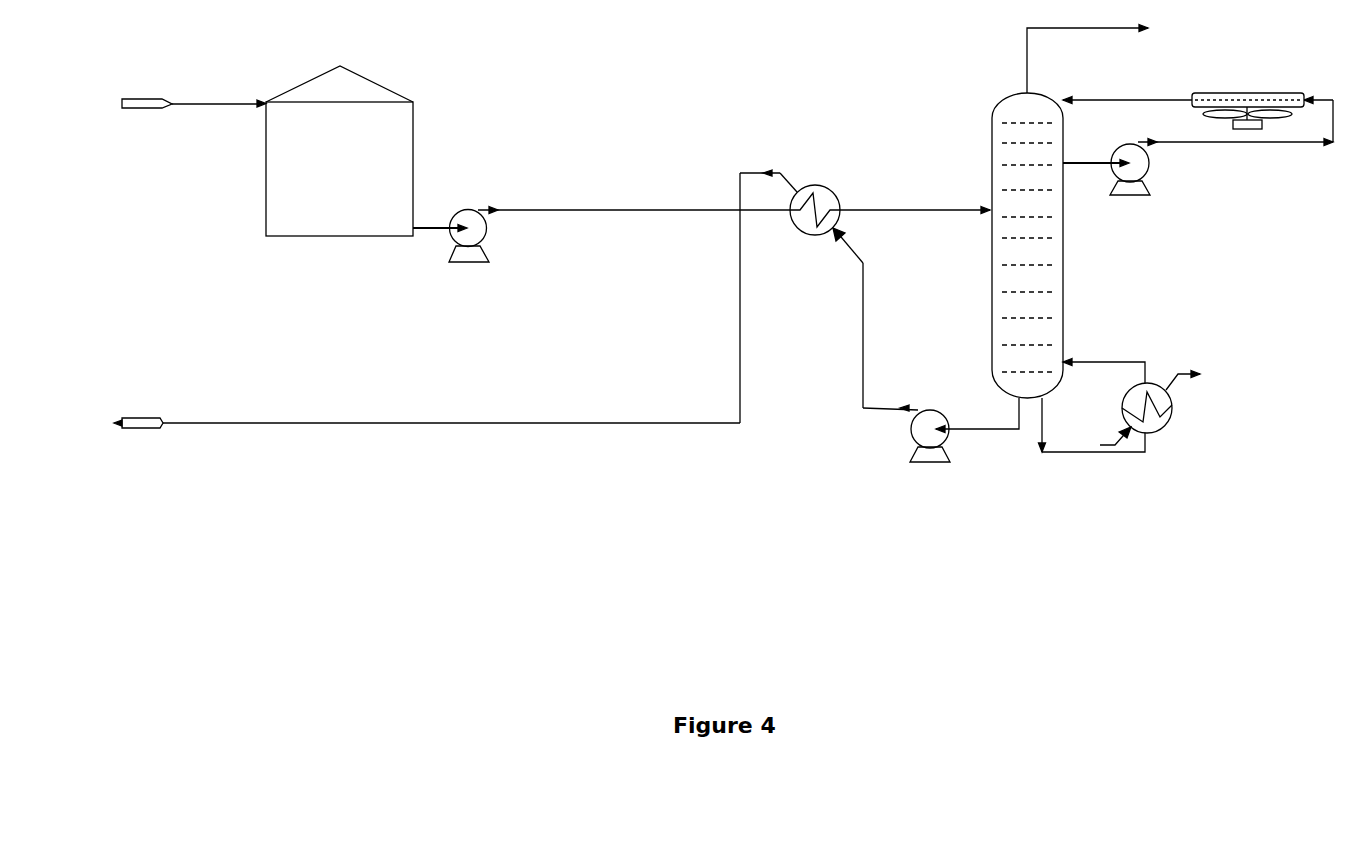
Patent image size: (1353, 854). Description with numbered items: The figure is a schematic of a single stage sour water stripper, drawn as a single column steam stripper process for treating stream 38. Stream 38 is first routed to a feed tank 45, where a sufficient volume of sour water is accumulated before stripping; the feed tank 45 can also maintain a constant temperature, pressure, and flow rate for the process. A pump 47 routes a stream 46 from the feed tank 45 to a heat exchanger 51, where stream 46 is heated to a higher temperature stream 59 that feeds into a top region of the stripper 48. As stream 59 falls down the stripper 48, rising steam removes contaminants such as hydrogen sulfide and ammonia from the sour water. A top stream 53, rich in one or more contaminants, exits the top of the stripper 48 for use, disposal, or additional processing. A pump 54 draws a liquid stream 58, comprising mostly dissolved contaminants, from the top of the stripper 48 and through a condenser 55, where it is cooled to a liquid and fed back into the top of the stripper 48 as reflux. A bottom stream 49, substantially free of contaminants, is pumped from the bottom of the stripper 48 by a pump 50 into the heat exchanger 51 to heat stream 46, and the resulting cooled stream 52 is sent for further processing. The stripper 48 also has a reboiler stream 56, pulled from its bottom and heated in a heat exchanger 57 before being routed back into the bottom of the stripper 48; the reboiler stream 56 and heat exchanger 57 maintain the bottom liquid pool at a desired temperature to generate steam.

The stream 38 is at (173, 104).
The feed tank 45 is at (342, 167).
The stream 46 is at (440, 206).
The pump 47 is at (486, 290).
The stripper 48 is at (967, 290).
The bottom stream 49 is at (977, 415).
The pump 50 is at (939, 506).
The heat exchanger 51 is at (832, 161).
The cooled stream 52 is at (501, 302).
The top stream 53 is at (1109, 53).
The pump 54 is at (1149, 223).
The condenser 55 is at (1264, 73).
The reboiler stream 56 is at (1092, 406).
The heat exchanger 57 is at (1207, 425).
The liquid stream 58 is at (1096, 147).
The stream 59 is at (734, 194).